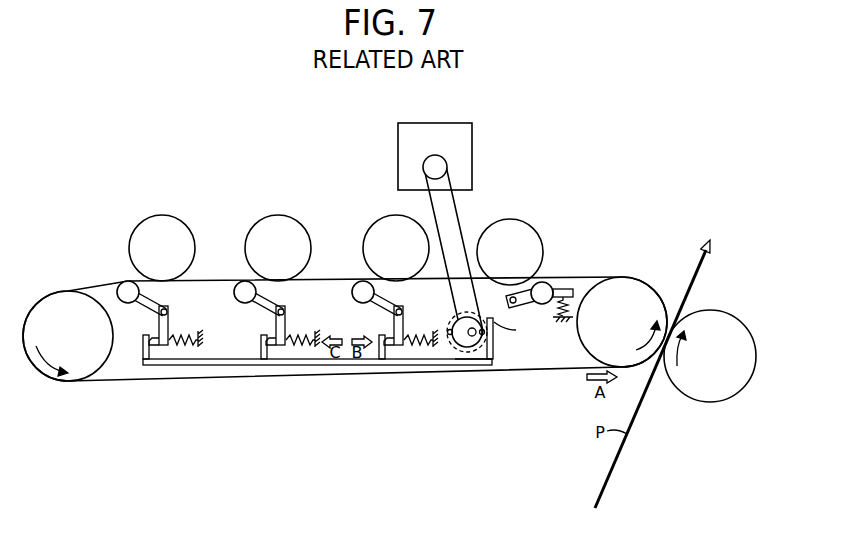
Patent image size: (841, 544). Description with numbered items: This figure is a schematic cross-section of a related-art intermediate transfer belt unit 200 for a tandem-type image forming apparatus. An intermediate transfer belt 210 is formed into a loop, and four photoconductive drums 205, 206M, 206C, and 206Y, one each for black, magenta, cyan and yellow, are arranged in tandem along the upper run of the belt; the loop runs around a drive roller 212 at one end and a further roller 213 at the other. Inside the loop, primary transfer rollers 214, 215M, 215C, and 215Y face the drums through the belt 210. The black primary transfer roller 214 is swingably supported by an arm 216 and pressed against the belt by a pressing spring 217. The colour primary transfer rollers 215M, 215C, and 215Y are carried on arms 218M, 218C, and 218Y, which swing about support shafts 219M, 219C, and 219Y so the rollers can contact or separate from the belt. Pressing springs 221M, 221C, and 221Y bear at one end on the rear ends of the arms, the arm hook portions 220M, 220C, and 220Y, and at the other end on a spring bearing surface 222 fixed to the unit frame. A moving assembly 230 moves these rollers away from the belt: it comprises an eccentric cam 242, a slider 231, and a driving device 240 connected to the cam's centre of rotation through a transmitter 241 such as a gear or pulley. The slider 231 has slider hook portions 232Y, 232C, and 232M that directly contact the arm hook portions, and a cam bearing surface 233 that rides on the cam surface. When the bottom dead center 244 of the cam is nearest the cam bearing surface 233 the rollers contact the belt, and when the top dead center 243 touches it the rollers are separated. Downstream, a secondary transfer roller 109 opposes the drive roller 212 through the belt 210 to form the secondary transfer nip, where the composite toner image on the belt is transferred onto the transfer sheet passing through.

The intermediate transfer belt unit 200 is at (581, 137).
The photoconductive drum 205 is at (505, 221).
The photoconductive drum 206Y is at (149, 218).
The photoconductive drum 206C is at (266, 218).
The photoconductive drum 206M is at (384, 218).
The secondary transfer roller 109 is at (718, 314).
The intermediate transfer belt 210 is at (96, 380).
The drive roller 212 is at (637, 282).
The tension roller 213 is at (58, 297).
The primary transfer roller 214 is at (542, 282).
The primary transfer roller 215Y is at (119, 283).
The primary transfer roller 215C is at (236, 283).
The primary transfer roller 215M is at (354, 283).
The arm 216 is at (523, 296).
The pressing spring 217 is at (574, 300).
The arm 218Y is at (169, 300).
The arm 218C is at (286, 300).
The arm 218M is at (404, 300).
The support shaft 219Y is at (168, 312).
The support shaft 219C is at (285, 312).
The support shaft 219M is at (403, 312).
The arm hook portion 220Y is at (167, 344).
The arm hook portion 220C is at (284, 344).
The arm hook portion 220M is at (388, 344).
The pressing spring 221Y is at (192, 336).
The pressing spring 221C is at (309, 336).
The pressing spring 221M is at (420, 346).
The spring bearing surface 222 is at (190, 366).
The moving assembly 230 is at (514, 374).
The slider 231 is at (476, 348).
The slider hook portion 232Y is at (146, 362).
The slider hook portion 232C is at (264, 362).
The slider hook portion 232M is at (382, 362).
The cam bearing surface 233 is at (540, 357).
The driving device 240 is at (398, 142).
The transmitter 241 is at (433, 212).
The eccentric cam 242 is at (492, 362).
The top dead center 243 is at (472, 362).
The bottom dead center 244 is at (495, 348).